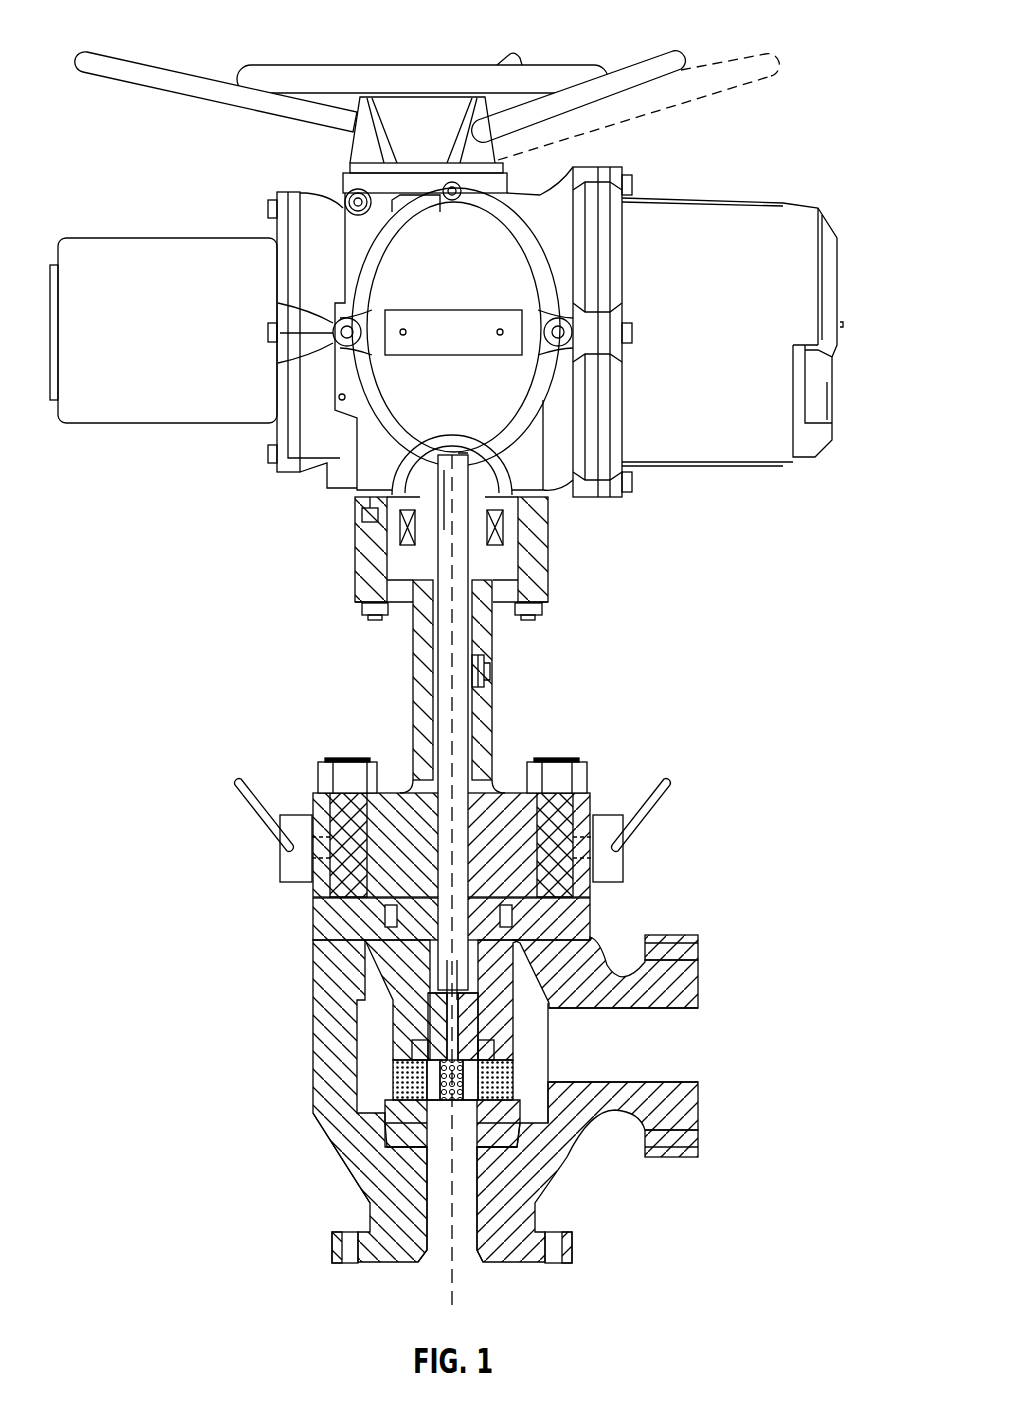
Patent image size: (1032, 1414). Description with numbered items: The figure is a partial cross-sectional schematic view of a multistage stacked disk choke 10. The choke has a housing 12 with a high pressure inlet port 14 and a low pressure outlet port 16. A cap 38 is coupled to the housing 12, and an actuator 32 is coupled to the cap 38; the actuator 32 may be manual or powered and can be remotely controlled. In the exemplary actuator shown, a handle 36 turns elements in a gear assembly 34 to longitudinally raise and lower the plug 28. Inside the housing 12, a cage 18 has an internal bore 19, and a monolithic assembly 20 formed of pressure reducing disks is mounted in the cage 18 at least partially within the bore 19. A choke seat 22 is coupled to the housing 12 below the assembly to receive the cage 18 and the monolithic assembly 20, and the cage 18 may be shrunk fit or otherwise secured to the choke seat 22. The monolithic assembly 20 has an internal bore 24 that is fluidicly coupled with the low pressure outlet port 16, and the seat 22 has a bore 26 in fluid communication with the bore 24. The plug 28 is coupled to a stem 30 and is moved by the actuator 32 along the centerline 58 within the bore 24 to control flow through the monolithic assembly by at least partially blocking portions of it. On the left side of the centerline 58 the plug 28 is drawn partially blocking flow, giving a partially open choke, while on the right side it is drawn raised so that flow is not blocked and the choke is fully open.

The choke 10 is at (812, 32).
The housing 12 is at (590, 938).
The high pressure inlet port 14 is at (690, 1042).
The low pressure outlet port 16 is at (467, 1252).
The cage 18 is at (403, 1000).
The internal bore 19 is at (410, 1127).
The monolithic assembly 20 is at (398, 1063).
The choke seat 22 is at (427, 1087).
The internal bore 24 is at (445, 1107).
The bore 26 is at (360, 1185).
The plug 28 is at (414, 1050).
The stem 30 is at (440, 957).
The actuator 32 is at (632, 660).
The gear assembly 34 is at (832, 423).
The handle 36 is at (298, 65).
The cap 38 is at (393, 846).
The centerline 58 is at (450, 1270).